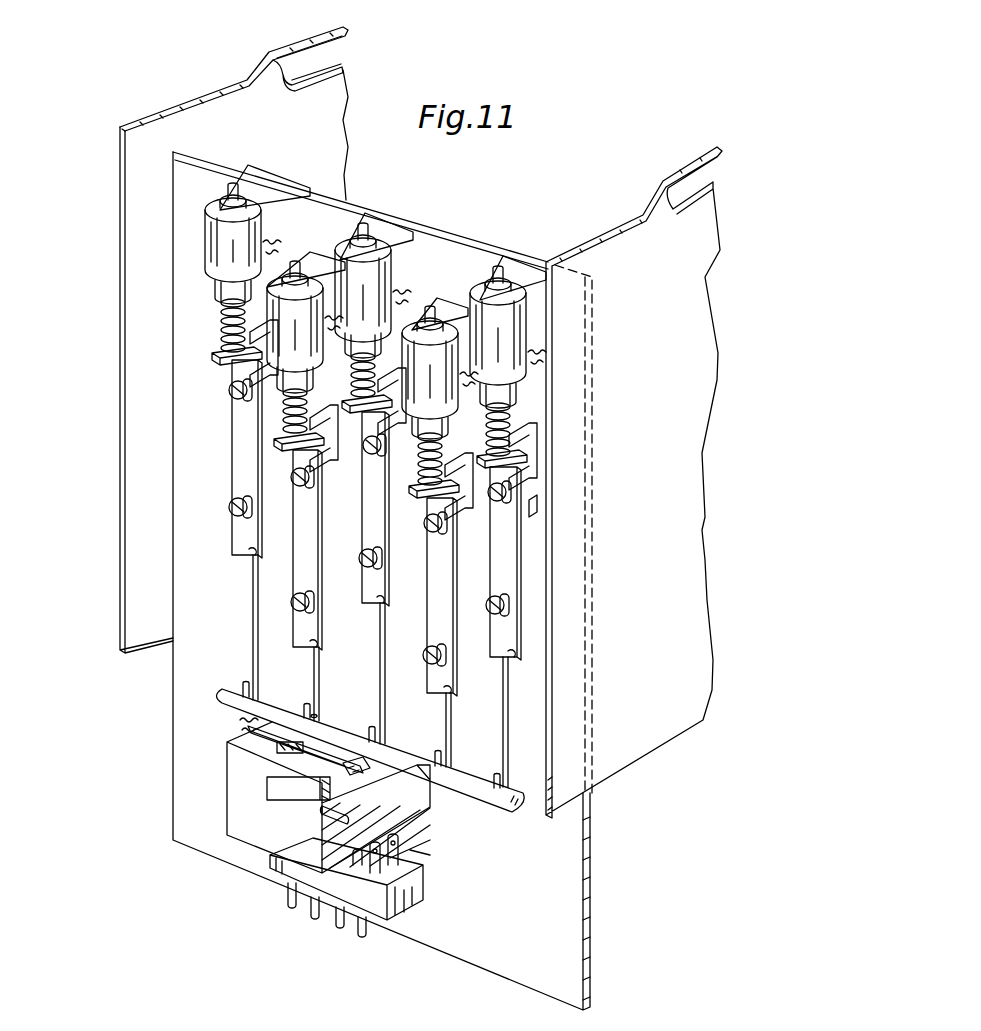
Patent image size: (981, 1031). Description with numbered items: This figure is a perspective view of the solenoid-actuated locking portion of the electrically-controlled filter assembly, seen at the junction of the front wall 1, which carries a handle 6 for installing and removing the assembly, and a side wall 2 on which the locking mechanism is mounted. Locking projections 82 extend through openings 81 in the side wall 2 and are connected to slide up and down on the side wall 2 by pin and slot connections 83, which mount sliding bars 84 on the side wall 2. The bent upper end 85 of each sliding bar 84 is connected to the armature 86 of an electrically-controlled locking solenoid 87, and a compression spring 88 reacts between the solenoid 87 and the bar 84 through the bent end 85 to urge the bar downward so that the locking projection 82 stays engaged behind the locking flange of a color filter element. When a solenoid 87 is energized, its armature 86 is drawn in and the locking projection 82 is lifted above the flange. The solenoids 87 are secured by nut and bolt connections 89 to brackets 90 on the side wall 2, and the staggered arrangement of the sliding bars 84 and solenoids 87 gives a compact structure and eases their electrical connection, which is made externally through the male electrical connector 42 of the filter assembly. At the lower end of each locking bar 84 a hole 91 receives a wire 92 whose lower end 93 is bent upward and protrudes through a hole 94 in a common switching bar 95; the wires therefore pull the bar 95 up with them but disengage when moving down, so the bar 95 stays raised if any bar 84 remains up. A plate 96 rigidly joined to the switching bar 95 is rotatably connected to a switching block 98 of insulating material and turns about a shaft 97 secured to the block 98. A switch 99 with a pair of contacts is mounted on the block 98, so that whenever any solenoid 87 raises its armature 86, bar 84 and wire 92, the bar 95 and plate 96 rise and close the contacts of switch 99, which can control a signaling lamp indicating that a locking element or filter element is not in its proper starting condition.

The front wall 1 is at (203, 115).
The side wall 2 is at (578, 885).
The handle 6 is at (290, 58).
The male electrical connector 42 is at (412, 882).
The opening 81 is at (538, 512).
The locking projection 82 is at (533, 500).
The pin and slot connection 83 is at (362, 448).
The sliding bar 84 is at (372, 539).
The bent upper end 85 is at (513, 455).
The armature 86 is at (505, 432).
The locking solenoid 87 is at (502, 343).
The compression spring 88 is at (438, 443).
The nut and bolt connection 89 is at (505, 289).
The bracket 90 is at (497, 270).
The hole 91 is at (315, 633).
The wire 92 is at (316, 663).
The lower end 93 is at (303, 703).
The hole 94 is at (316, 714).
The switching bar 95 is at (387, 745).
The plate 96 is at (363, 762).
The shaft 97 is at (323, 810).
The switching block 98 is at (238, 790).
The switch 99 is at (280, 752).